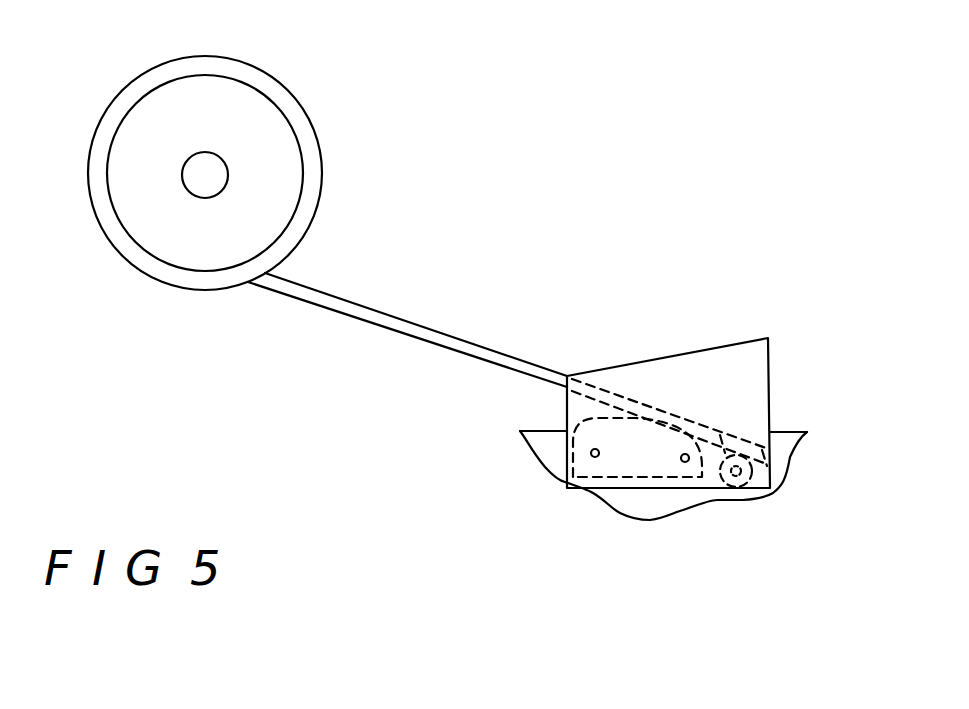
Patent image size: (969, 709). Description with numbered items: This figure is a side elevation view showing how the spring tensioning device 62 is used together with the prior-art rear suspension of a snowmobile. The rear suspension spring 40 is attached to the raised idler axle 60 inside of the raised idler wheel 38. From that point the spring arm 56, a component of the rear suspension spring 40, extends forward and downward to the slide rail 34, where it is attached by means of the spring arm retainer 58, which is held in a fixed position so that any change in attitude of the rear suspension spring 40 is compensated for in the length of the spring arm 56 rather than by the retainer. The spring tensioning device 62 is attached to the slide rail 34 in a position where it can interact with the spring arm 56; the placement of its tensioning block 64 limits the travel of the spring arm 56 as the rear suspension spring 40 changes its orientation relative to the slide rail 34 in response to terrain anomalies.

The slide rail 34 is at (545, 468).
The raised idler wheel 38 is at (315, 130).
The rear suspension spring 40 is at (313, 85).
The spring arm 56 is at (378, 309).
The spring arm retainer 58 is at (728, 483).
The raised idler axle 60 is at (200, 203).
The spring tensioning device 62 is at (643, 349).
The tensioning block 64 is at (648, 437).